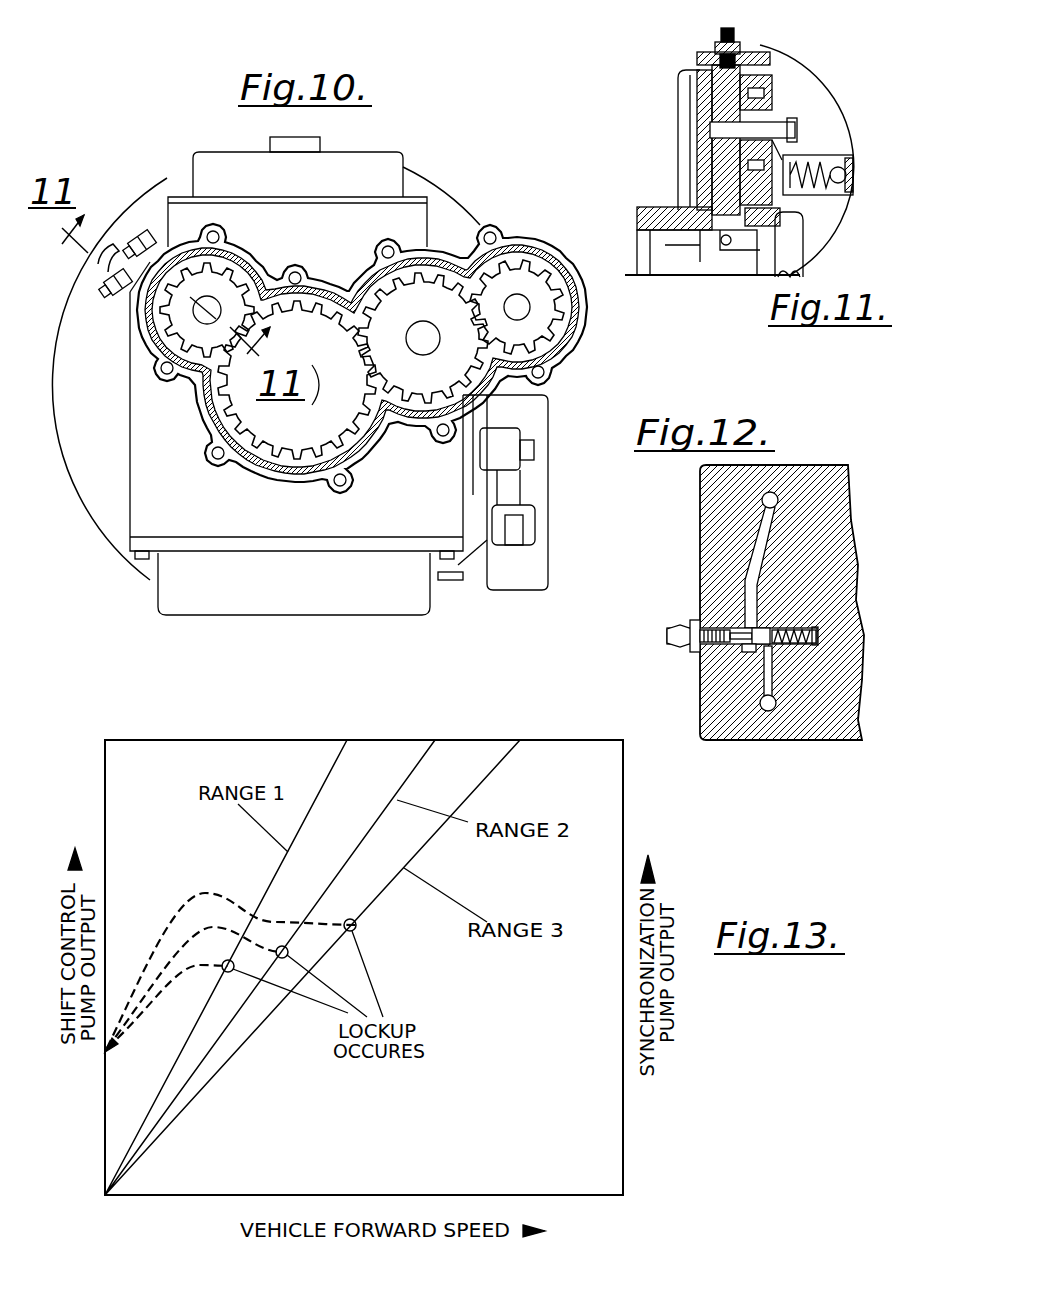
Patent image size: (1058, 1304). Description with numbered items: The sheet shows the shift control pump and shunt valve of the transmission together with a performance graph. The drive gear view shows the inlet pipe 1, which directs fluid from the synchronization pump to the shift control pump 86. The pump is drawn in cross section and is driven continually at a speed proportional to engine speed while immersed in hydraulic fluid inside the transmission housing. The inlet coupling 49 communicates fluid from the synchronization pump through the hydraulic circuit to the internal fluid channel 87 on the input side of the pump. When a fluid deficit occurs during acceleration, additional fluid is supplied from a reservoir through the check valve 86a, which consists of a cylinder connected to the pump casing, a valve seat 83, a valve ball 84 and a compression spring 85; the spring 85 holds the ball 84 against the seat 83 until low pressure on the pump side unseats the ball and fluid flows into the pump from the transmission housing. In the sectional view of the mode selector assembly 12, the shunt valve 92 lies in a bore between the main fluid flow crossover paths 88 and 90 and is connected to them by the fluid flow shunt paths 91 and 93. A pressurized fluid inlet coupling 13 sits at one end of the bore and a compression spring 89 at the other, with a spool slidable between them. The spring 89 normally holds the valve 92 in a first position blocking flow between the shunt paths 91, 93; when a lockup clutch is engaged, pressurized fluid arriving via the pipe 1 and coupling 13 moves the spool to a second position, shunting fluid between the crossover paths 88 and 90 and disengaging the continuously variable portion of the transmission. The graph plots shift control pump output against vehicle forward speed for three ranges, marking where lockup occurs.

In FIG. 10, the inlet pipe 1 is at (107, 242).
In FIG. 10, the inlet coupling 49 is at (125, 289).
In FIG. 11, the inlet coupling 49 is at (717, 44).
In FIG. 11, the shift control pump 86 is at (772, 110).
In FIG. 11, the check valve 86a is at (816, 156).
In FIG. 11, the internal fluid channel 87 is at (718, 93).
In FIG. 11, the valve seat 83 is at (852, 160).
In FIG. 11, the valve ball 84 is at (849, 177).
In FIG. 11, the compression spring 85 is at (836, 196).
In FIG. 12, the mode selector assembly 12 is at (700, 497).
In FIG. 12, the fluid flow shunt path 93 is at (742, 566).
In FIG. 12, the pressurized fluid inlet coupling 13 is at (690, 623).
In FIG. 12, the shunt valve 92 is at (740, 650).
In FIG. 12, the fluid flow shunt path 91 is at (760, 686).
In FIG. 12, the main fluid flow crossover path 90 is at (773, 712).
In FIG. 12, the main fluid flow crossover path 88 is at (780, 503).
In FIG. 12, the compression spring 89 is at (818, 637).